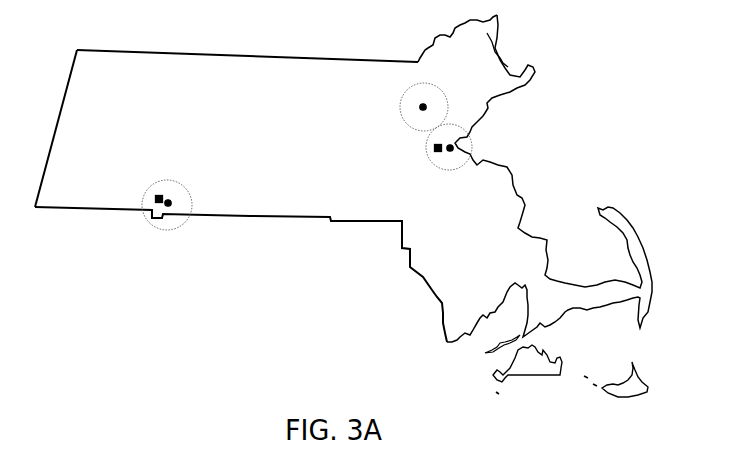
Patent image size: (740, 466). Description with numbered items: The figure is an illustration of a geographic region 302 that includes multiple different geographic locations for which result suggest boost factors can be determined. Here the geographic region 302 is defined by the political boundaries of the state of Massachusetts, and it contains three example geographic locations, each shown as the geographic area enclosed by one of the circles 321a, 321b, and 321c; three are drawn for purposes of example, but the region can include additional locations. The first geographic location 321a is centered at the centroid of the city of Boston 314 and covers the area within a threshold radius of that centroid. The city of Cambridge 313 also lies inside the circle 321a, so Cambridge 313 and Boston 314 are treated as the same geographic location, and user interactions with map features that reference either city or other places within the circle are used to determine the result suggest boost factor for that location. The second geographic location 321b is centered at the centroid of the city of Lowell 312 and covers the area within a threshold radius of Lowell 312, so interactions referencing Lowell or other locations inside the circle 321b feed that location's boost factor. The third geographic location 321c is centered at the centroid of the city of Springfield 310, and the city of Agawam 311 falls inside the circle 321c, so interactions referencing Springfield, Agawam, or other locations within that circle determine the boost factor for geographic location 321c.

The geographic region 302 is at (138, 50).
The city of Springfield 310 is at (164, 204).
The city of Agawam 311 is at (155, 196).
The city of Lowell 312 is at (423, 107).
The city of Cambridge 313 is at (430, 156).
The city of Boston 314 is at (473, 133).
The circle 321a is at (473, 147).
The circle 321b is at (400, 107).
The circle 321c is at (173, 225).